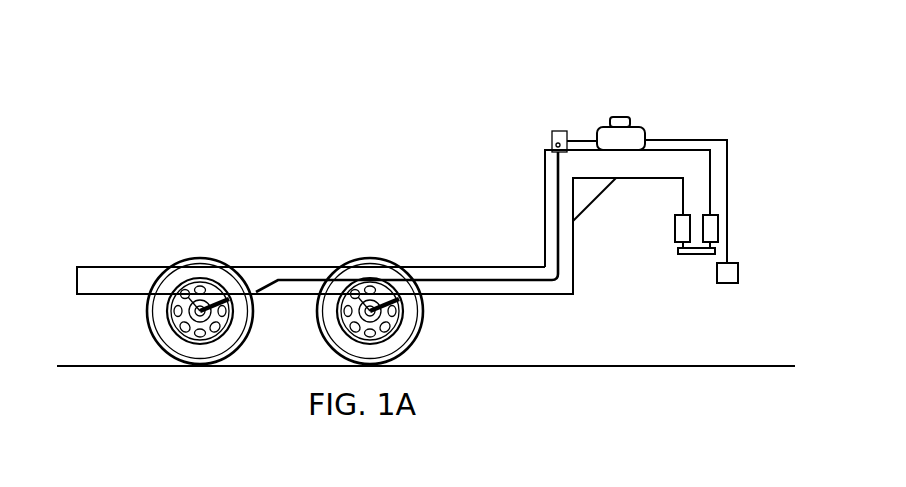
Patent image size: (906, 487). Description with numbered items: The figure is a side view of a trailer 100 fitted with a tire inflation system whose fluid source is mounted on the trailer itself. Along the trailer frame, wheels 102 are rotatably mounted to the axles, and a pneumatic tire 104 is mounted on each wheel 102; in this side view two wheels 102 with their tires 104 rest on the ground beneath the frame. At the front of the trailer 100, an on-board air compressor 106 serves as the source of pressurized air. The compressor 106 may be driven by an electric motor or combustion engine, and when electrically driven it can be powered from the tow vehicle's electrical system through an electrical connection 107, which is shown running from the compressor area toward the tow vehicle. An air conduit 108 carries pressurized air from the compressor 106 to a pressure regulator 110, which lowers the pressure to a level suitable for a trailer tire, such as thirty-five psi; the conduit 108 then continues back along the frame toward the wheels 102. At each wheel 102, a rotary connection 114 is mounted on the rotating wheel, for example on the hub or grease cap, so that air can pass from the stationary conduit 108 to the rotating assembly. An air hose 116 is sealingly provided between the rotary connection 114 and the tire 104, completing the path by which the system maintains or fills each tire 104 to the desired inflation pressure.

The trailer 100 is at (200, 119).
The wheel 102 is at (137, 325).
The pneumatic tire 104 is at (254, 328).
The air compressor 106 is at (640, 127).
The electrical connection 107 is at (728, 235).
The air conduit 108 is at (556, 228).
The pressure regulator 110 is at (559, 130).
The rotary connection 114 is at (184, 289).
The air hose 116 is at (220, 300).